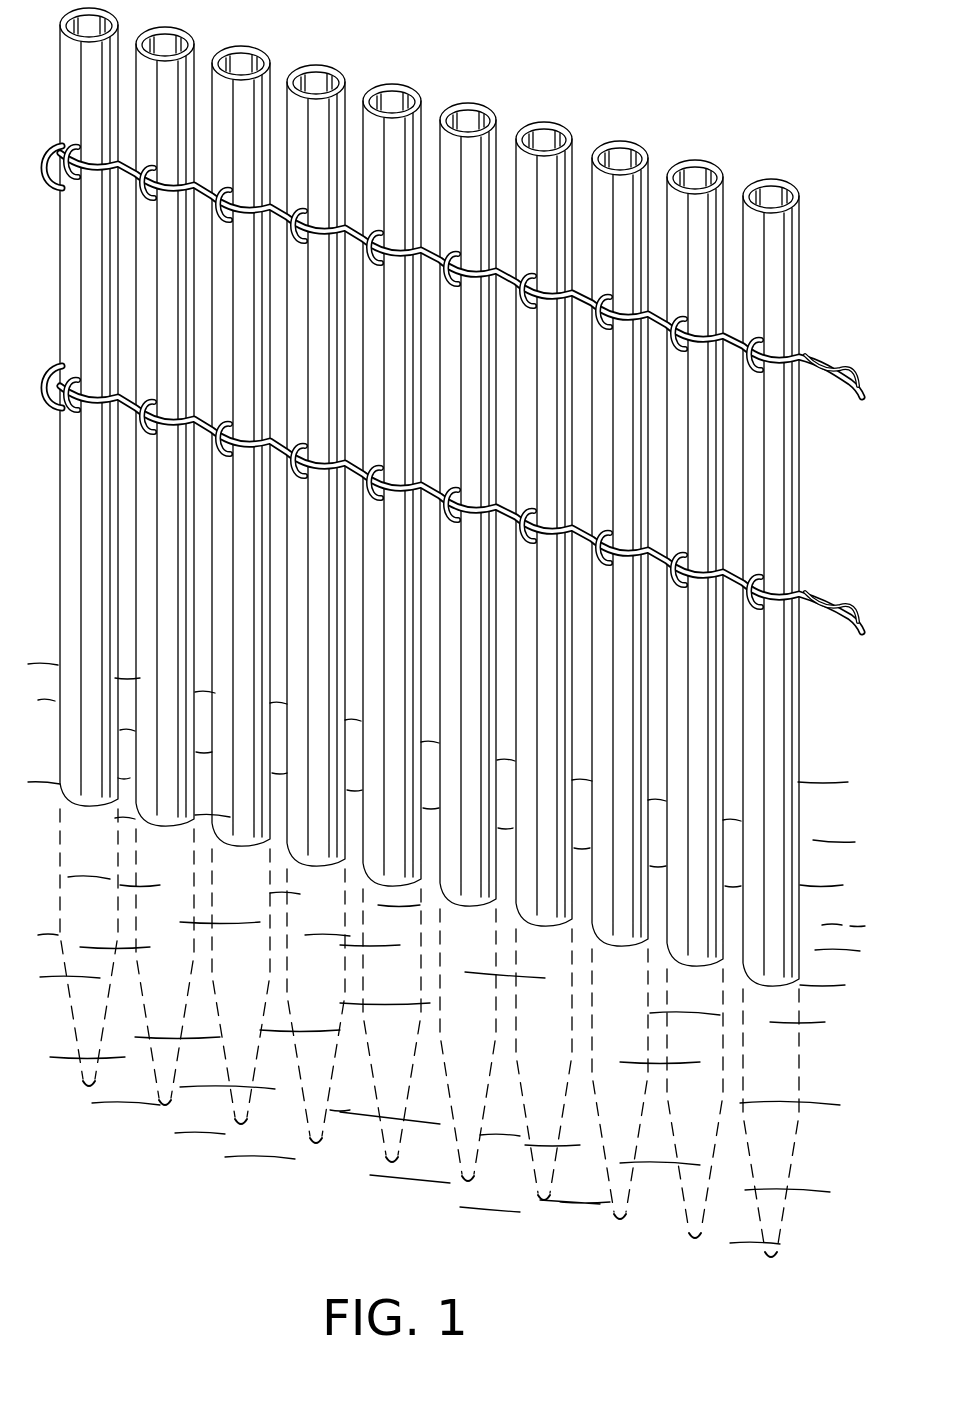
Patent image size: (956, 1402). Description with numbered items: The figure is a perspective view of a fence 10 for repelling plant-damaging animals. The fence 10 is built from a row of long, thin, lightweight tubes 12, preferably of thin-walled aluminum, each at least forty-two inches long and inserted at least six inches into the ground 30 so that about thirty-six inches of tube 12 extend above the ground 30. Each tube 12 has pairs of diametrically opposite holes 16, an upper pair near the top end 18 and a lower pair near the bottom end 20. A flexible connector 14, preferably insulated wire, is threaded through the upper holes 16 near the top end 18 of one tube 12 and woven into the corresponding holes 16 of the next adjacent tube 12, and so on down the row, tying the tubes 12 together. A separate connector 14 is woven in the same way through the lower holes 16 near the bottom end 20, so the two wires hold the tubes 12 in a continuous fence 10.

The fence 10 is at (453, 641).
The tube 12 is at (797, 218).
The flexible connector 14 is at (858, 614).
The hole 16 is at (758, 566).
The top end 18 is at (765, 192).
The bottom end 20 is at (783, 1238).
The ground 30 is at (817, 781).